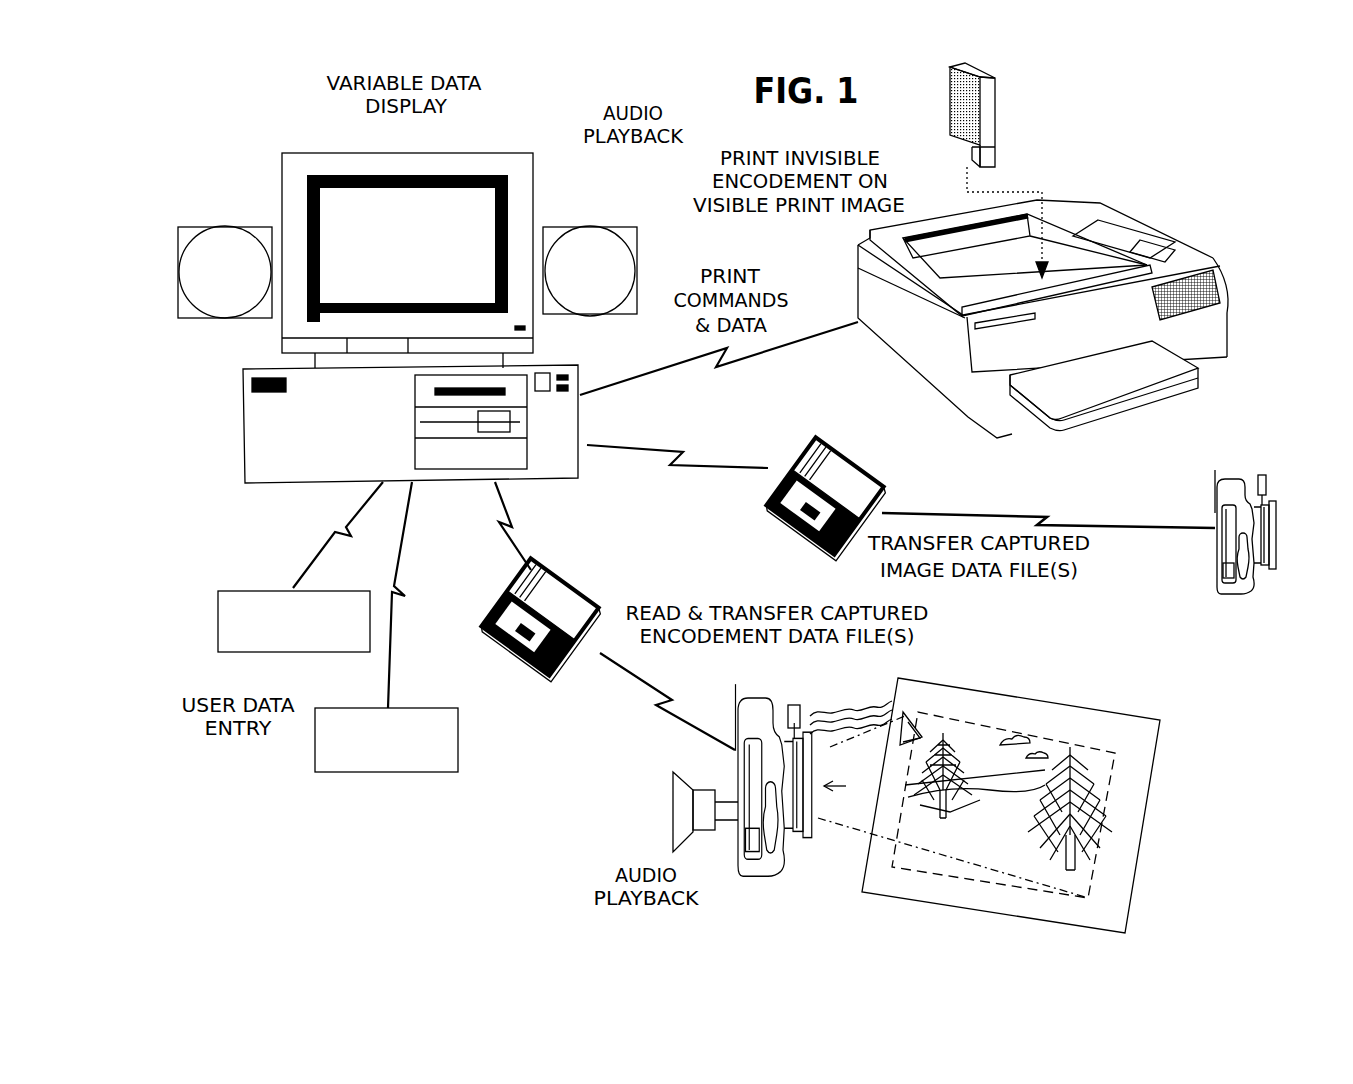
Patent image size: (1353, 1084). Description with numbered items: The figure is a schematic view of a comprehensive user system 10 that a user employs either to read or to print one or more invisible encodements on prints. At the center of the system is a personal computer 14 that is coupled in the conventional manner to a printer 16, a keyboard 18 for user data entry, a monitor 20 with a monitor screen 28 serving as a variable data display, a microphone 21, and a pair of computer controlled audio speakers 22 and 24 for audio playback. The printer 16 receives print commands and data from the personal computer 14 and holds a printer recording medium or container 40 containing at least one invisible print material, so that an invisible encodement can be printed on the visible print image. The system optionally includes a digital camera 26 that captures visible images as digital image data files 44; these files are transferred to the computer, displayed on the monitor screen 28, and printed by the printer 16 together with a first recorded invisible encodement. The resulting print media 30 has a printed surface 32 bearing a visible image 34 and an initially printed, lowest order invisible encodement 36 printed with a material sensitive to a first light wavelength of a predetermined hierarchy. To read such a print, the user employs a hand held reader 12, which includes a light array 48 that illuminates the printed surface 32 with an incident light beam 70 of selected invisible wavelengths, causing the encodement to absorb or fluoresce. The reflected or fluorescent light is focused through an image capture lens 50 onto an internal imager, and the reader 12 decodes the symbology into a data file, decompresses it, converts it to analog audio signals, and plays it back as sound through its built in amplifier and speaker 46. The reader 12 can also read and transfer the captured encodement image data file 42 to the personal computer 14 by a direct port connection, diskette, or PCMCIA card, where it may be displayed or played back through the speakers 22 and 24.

The user system 10 is at (1205, 90).
The hand held reader 12 is at (654, 773).
The personal computer 14 is at (333, 450).
The printer 16 is at (1122, 202).
The keyboard 18 is at (236, 580).
The monitor 20 is at (418, 233).
The microphone 21 is at (404, 703).
The computer controlled audio speaker 22 is at (180, 218).
The computer controlled audio speaker 24 is at (553, 218).
The digital camera 26 is at (1230, 463).
The monitor screen 28 is at (393, 223).
The print media 30 is at (1007, 803).
The printed surface 32 is at (1078, 758).
The invisible encodement image 34 is at (957, 880).
The invisible encodement 36 is at (1075, 725).
The printer recording medium or container 40 is at (1003, 118).
The encodement image data file 42 is at (565, 565).
The digital image data file 44 is at (818, 445).
The amplifier and speaker 46 is at (672, 825).
The light array 48 is at (808, 700).
The image capture lens 50 is at (848, 786).
The light beam 70 is at (870, 700).